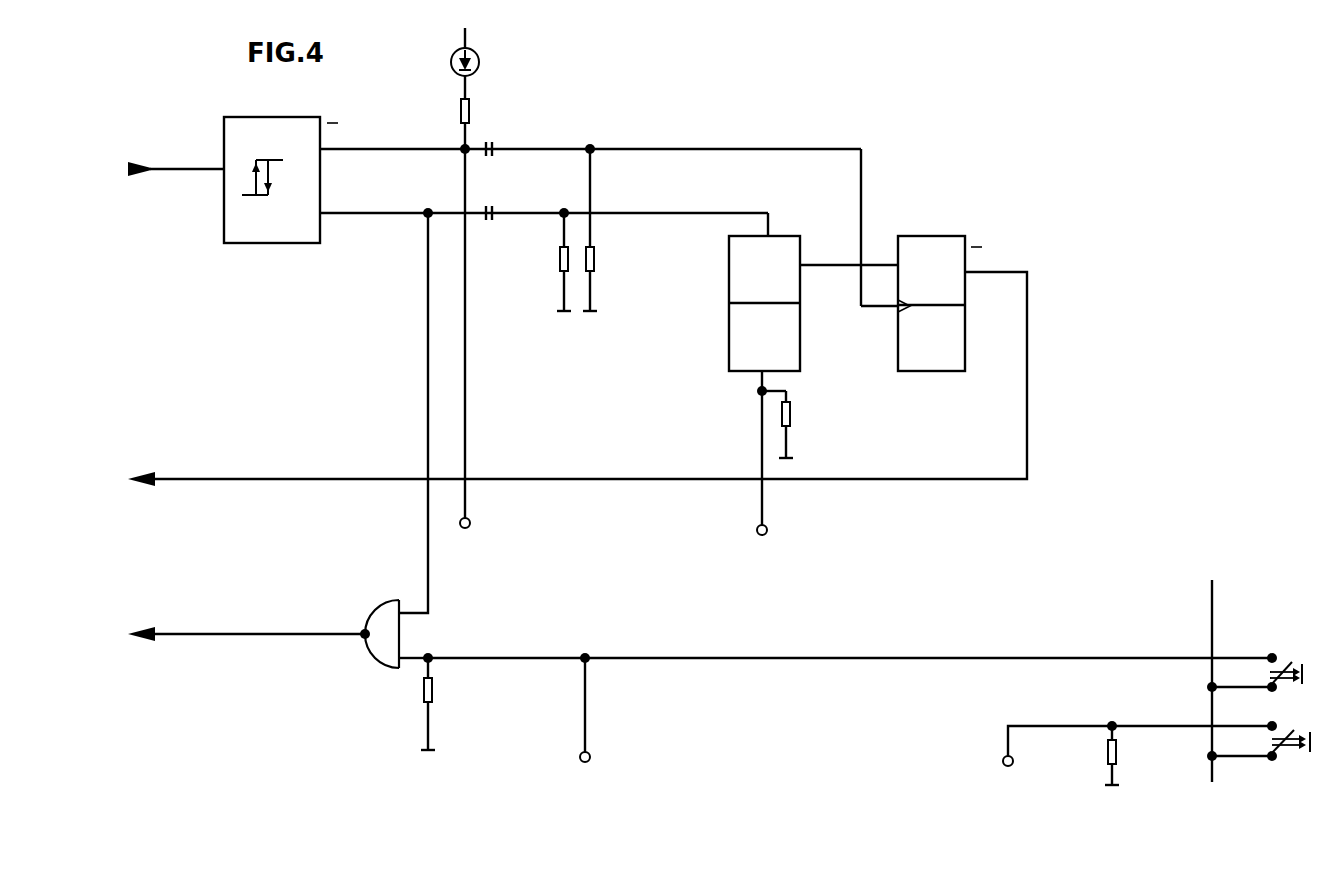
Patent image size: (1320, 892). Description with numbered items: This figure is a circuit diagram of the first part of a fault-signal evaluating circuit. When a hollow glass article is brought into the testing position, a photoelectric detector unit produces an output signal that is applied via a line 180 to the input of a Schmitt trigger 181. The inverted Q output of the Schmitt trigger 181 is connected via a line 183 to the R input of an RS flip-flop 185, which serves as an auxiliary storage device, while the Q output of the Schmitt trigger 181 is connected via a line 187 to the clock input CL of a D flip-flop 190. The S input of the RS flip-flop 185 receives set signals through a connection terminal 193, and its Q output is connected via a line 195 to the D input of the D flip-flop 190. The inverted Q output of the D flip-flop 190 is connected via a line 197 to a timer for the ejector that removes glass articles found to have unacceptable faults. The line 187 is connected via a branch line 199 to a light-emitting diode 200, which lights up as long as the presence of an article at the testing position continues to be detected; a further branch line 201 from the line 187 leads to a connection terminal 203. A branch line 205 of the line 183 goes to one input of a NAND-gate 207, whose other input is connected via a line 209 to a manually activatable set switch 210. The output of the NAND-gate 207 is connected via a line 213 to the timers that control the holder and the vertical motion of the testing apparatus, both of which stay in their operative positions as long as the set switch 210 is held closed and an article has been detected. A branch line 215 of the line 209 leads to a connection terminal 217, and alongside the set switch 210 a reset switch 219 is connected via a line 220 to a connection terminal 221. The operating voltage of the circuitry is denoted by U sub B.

The line 180 is at (170, 172).
The Schmitt trigger 181 is at (248, 244).
The line 183 is at (637, 214).
The RS flip-flop 185 is at (729, 340).
The line 187 is at (650, 149).
The D flip-flop 190 is at (908, 372).
The connection terminal 193 is at (757, 534).
The line 195 is at (836, 266).
The line 197 is at (1027, 418).
The branch line 199 is at (466, 138).
The light-emitting diode 200 is at (478, 68).
The branch line 201 is at (466, 346).
The connection terminal 203 is at (468, 528).
The branch line 205 is at (427, 378).
The NAND-gate 207 is at (386, 600).
The line 209 is at (790, 657).
The set switch 210 is at (1284, 652).
The line 213 is at (256, 635).
The branch line 215 is at (586, 715).
The connection terminal 217 is at (579, 758).
The reset switch 219 is at (1288, 764).
The line 220 is at (1072, 725).
The connection terminal 221 is at (1003, 761).